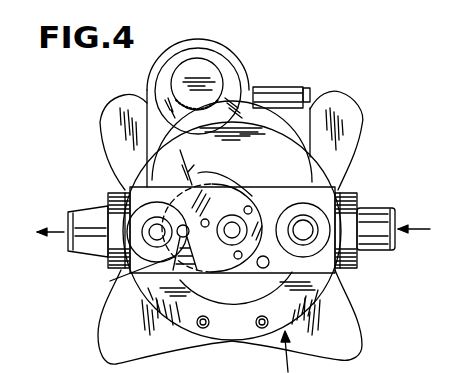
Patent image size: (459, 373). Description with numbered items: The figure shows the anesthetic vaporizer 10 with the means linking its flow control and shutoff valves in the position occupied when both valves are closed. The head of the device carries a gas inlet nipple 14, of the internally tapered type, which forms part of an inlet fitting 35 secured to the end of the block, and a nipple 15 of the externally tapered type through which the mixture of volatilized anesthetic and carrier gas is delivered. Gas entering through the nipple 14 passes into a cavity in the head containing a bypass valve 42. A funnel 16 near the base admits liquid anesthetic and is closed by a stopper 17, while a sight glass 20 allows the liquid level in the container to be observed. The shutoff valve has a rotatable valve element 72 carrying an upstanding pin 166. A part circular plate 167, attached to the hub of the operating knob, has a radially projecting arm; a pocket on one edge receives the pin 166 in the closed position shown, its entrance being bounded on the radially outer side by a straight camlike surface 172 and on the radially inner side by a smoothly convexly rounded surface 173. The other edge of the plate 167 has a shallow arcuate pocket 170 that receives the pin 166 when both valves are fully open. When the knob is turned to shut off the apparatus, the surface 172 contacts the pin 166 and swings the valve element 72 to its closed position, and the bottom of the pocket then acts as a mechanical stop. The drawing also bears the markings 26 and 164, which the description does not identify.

The anesthetic vaporizer 10 is at (336, 72).
The gas inlet nipple 14 is at (390, 220).
The nipple 15 is at (85, 223).
The funnel 16 is at (247, 73).
The stopper 17 is at (210, 70).
The sight glass 20 is at (281, 97).
The mounting lobes 26 is at (108, 113).
The inlet fitting 35 is at (356, 202).
The bypass valve 42 is at (330, 264).
The rotatable valve element 72 is at (152, 207).
The cam plate 164 is at (196, 262).
The upstanding pin 166 is at (166, 284).
The part circular plate 167 is at (187, 163).
The shallow arcuate pocket 170 is at (205, 173).
The straight surface 172 is at (127, 274).
The convexly rounded side 173 is at (179, 266).